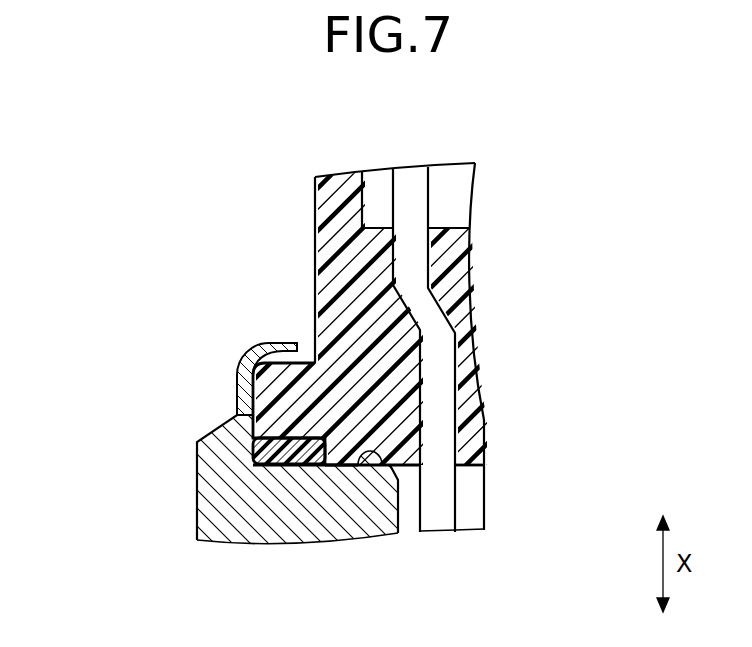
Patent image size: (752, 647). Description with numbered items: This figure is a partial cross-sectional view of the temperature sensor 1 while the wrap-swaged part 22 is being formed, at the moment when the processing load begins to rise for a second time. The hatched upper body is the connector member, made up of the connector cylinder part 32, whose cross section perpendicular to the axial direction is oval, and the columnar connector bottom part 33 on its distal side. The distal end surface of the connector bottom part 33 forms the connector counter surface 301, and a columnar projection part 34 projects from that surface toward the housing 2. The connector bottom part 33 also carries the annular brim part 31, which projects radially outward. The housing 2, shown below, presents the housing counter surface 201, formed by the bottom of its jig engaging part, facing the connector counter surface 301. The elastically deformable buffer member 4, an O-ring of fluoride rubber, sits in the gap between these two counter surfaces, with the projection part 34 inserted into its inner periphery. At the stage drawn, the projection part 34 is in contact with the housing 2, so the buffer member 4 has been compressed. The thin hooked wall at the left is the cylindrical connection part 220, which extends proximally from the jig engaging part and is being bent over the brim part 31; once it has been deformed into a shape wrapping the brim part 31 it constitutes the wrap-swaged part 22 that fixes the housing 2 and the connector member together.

The temperature sensor 1 is at (376, 323).
The housing 2 is at (311, 473).
The buffer member 4 is at (283, 468).
The wrap-swaged part 22 is at (278, 394).
The connection part 220 is at (243, 360).
The brim part 31 is at (245, 395).
The connector cylinder part 32 is at (313, 192).
The connector bottom part 33 is at (312, 265).
The projection part 34 is at (347, 466).
The housing counter surface 201 is at (378, 450).
The connector counter surface 301 is at (255, 448).